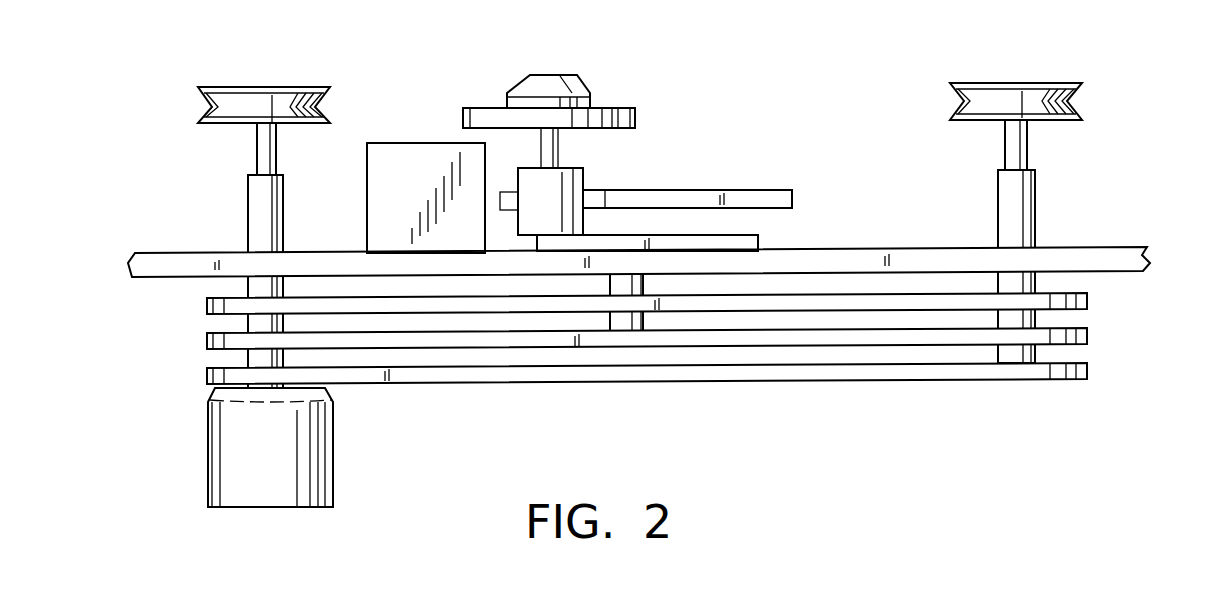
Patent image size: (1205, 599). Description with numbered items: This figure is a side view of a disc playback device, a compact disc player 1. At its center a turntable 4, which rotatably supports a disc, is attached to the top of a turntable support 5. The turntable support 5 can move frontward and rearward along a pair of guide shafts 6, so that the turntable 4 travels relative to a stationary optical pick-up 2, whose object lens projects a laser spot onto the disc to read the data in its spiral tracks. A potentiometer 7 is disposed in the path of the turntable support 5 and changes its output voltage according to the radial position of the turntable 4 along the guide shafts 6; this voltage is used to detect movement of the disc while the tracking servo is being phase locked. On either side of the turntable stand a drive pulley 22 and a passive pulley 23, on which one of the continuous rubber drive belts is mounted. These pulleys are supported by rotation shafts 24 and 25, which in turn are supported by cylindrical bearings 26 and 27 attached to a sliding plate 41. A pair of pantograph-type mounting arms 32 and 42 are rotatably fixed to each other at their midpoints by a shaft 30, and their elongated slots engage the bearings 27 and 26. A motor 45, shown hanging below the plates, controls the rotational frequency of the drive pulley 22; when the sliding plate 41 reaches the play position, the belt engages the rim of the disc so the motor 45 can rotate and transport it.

The compact disc player 1 is at (1122, 252).
The optical pick-up 2 is at (425, 150).
The turntable 4 is at (605, 116).
The turntable support 5 is at (582, 170).
The guide shafts 6 is at (688, 195).
The potentiometer 7 is at (760, 248).
The drive pulley 22 is at (245, 92).
The passive pulley 23 is at (1022, 83).
The rotation shaft 24 is at (258, 150).
The rotation shaft 25 is at (1027, 130).
The cylindrical bearing 26 is at (256, 201).
The cylindrical bearing 27 is at (1027, 200).
The shaft 30 is at (627, 327).
The mounting arm 32 is at (1088, 335).
The sliding plate 41 is at (1088, 370).
The mounting arm 42 is at (1088, 300).
The motor 45 is at (270, 497).